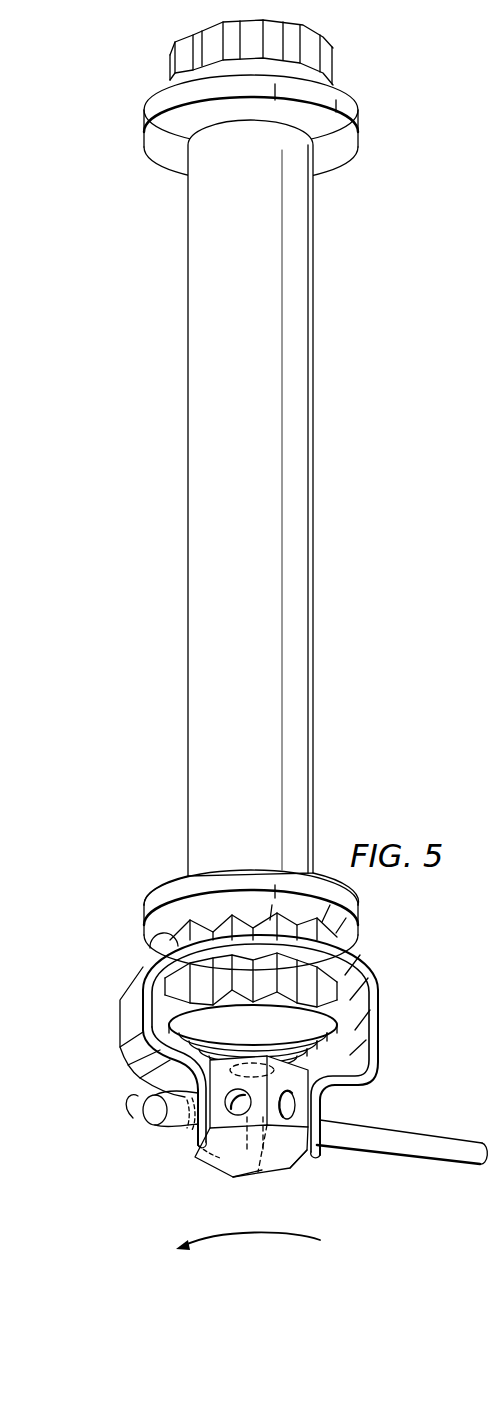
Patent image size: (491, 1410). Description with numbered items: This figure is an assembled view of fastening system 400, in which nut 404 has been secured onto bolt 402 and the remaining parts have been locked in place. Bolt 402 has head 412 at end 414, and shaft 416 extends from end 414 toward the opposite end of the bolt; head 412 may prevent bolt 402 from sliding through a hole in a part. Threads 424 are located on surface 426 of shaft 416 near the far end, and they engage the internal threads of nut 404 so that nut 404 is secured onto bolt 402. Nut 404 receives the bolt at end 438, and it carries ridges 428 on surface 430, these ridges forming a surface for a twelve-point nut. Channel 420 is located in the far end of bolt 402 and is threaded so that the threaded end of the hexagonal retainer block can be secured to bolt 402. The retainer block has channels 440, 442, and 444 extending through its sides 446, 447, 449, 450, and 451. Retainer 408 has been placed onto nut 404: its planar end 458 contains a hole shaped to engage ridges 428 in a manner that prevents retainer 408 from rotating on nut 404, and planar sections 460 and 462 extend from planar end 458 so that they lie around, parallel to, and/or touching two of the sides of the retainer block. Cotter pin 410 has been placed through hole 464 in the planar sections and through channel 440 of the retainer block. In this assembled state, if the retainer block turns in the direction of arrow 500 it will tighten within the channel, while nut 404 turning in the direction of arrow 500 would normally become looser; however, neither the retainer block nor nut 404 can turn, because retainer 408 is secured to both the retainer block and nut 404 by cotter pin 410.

The fastening system 400 is at (95, 233).
The bolt 402 is at (188, 353).
The nut 404 is at (361, 934).
The retainer 408 is at (377, 1035).
The cotter pin 410 is at (431, 1164).
The head 412 is at (340, 102).
The end 414 is at (220, 22).
The shaft 416 is at (187, 412).
The channel 420 is at (248, 1132).
The threads 424 is at (127, 1052).
The surface 426 is at (200, 478).
The ridges 428 is at (233, 972).
The surface 430 is at (160, 996).
The end 438 is at (162, 891).
The channel 440 is at (220, 1170).
The channel 442 is at (247, 1177).
The channel 444 is at (317, 1100).
The side 446 is at (348, 1135).
The side 447 is at (157, 1067).
The side 449 is at (218, 1193).
The side 450 is at (275, 1172).
The side 451 is at (300, 1165).
The planar end 458 is at (150, 944).
The planar section 460 is at (182, 1140).
The planar section 462 is at (318, 1156).
The hole 464 is at (187, 1124).
The arrow 500 is at (307, 1233).